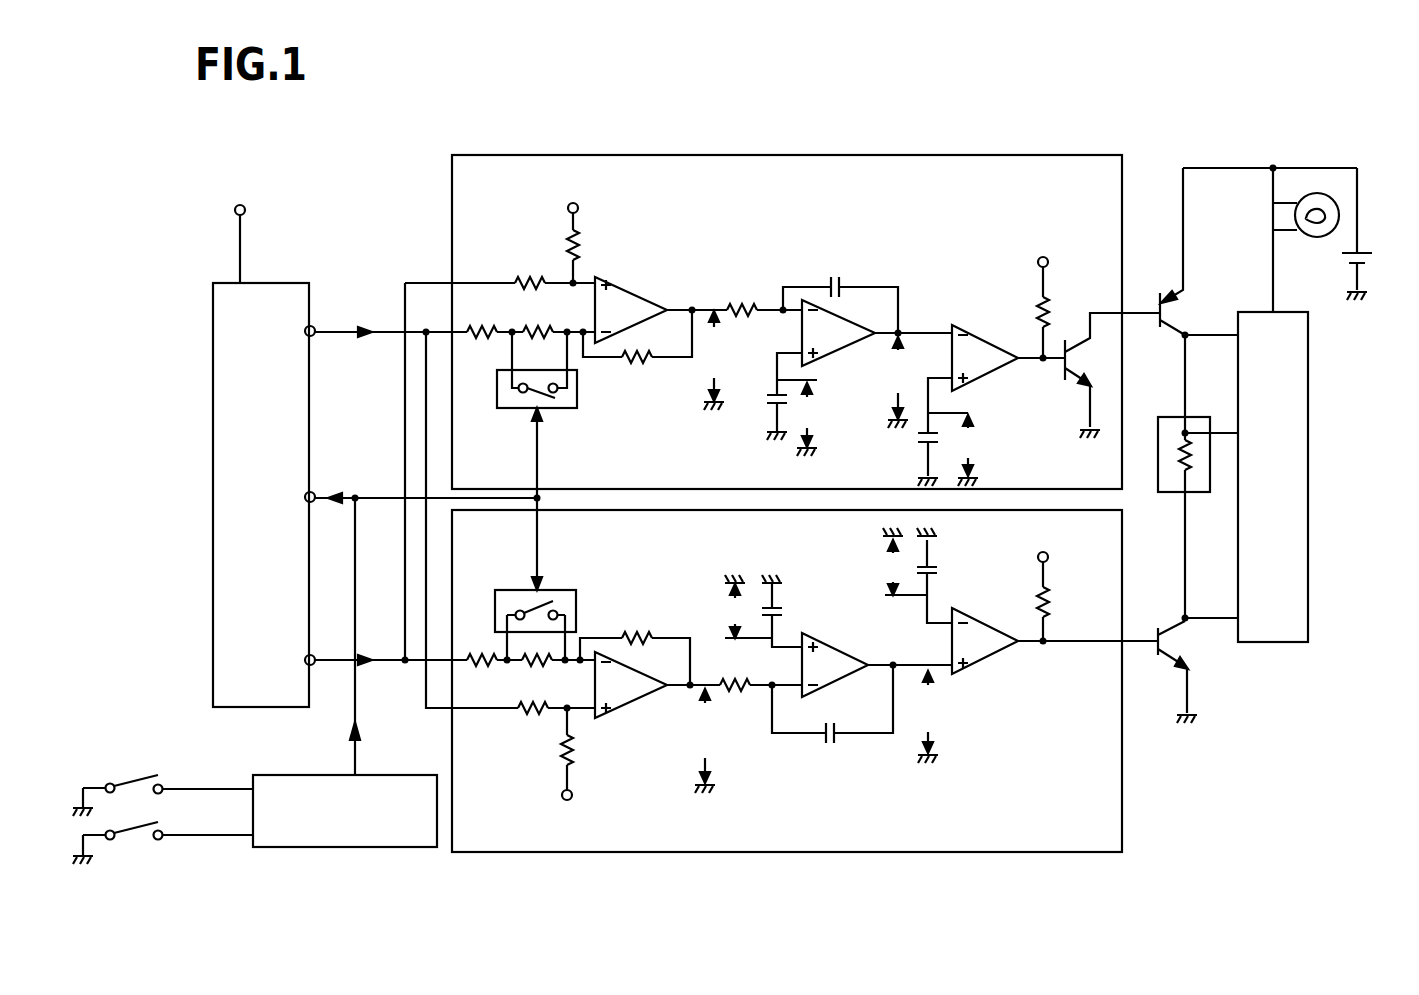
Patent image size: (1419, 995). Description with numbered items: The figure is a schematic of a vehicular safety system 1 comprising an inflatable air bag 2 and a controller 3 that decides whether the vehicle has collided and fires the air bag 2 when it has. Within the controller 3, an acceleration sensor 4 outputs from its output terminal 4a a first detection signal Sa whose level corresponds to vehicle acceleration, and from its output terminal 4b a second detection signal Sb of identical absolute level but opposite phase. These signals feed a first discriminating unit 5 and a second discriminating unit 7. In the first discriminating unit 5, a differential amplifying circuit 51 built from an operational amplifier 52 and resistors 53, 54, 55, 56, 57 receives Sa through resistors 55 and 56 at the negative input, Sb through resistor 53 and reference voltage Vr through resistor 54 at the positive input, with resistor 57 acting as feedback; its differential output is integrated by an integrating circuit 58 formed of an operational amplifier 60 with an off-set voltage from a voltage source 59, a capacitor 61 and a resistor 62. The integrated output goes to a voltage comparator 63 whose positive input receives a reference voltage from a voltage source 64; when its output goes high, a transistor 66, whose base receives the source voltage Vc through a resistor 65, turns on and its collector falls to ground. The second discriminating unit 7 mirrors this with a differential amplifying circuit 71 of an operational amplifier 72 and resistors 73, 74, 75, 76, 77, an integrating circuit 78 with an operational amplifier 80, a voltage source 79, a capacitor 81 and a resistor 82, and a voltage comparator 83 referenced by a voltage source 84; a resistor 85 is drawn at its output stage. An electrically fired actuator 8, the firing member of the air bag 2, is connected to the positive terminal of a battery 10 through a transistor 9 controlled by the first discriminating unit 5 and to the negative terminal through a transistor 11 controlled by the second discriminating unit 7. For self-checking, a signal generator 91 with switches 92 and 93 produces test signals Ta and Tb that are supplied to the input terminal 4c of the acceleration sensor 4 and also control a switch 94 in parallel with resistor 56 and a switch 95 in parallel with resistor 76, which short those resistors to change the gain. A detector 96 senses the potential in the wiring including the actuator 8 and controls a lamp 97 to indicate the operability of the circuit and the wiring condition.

The vehicular safety system 1 is at (998, 152).
The inflatable air bag 2 is at (1189, 478).
The controller 3 is at (416, 182).
The acceleration sensor 4 is at (257, 283).
The output terminal 4a is at (314, 327).
The output terminal 4b is at (314, 665).
The input terminal 4c is at (314, 492).
The first discriminating unit 5 is at (770, 155).
The second discriminating unit 7 is at (790, 852).
The electrically fired actuator 8 is at (1190, 468).
The transistor 9 is at (1172, 304).
The battery 10 is at (1373, 258).
The transistor 11 is at (1170, 642).
The differential amplifying circuit 51 is at (633, 238).
The operational amplifier 52 is at (634, 288).
The resistor 53 is at (526, 283).
The resistor 54 is at (576, 254).
The resistor 55 is at (483, 317).
The resistor 56 is at (547, 332).
The feedback resistor 57 is at (634, 359).
The integrating circuit 58 is at (898, 282).
The voltage source 59 is at (766, 398).
The operational amplifier 60 is at (842, 345).
The capacitor 61 is at (835, 278).
The resistor 62 is at (743, 304).
The voltage comparator 63 is at (980, 335).
The voltage source 64 is at (918, 440).
The resistor 65 is at (1048, 314).
The transistor 66 is at (1068, 366).
The differential amplifying circuit 71 is at (613, 757).
The operational amplifier 72 is at (623, 690).
The resistor 73 is at (524, 708).
The resistor 74 is at (560, 757).
The resistor 75 is at (480, 658).
The resistor 76 is at (538, 661).
The feedback resistor 77 is at (632, 638).
The integrating circuit 78 is at (853, 745).
The voltage source 79 is at (782, 610).
The operational amplifier 80 is at (827, 648).
The capacitor 81 is at (831, 743).
The resistor 82 is at (760, 702).
The voltage comparator 83 is at (994, 652).
The voltage source 84 is at (937, 568).
The resistor 85 is at (1055, 602).
The signal generator 91 is at (372, 775).
The switch 92 is at (135, 780).
The switch 93 is at (132, 836).
The switch 94 is at (577, 398).
The switch 95 is at (554, 590).
The detector 96 is at (1308, 503).
The lamp 97 is at (1306, 232).